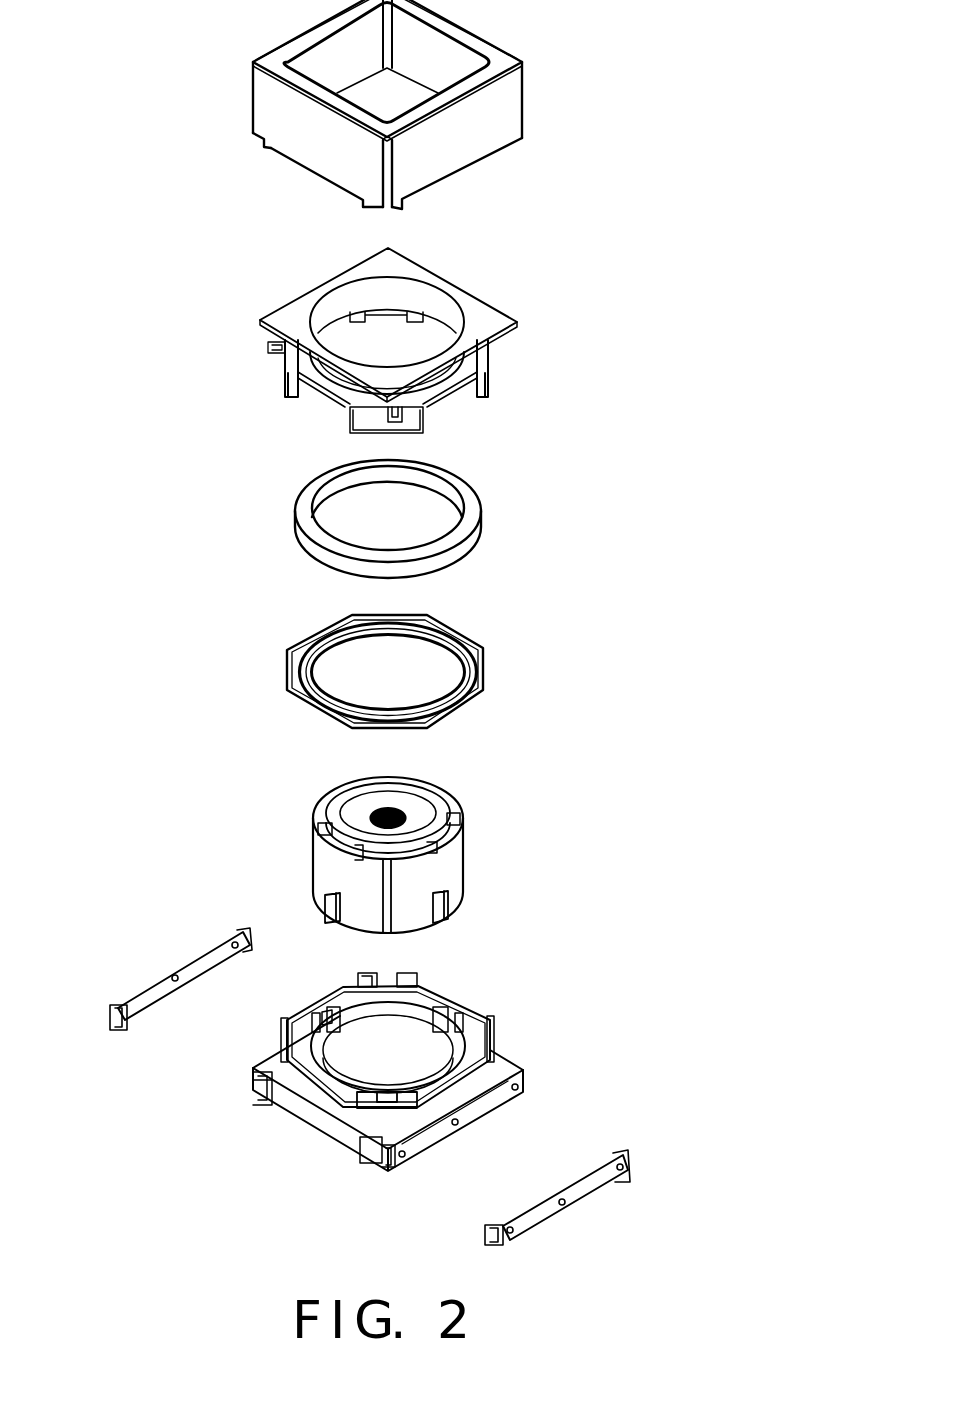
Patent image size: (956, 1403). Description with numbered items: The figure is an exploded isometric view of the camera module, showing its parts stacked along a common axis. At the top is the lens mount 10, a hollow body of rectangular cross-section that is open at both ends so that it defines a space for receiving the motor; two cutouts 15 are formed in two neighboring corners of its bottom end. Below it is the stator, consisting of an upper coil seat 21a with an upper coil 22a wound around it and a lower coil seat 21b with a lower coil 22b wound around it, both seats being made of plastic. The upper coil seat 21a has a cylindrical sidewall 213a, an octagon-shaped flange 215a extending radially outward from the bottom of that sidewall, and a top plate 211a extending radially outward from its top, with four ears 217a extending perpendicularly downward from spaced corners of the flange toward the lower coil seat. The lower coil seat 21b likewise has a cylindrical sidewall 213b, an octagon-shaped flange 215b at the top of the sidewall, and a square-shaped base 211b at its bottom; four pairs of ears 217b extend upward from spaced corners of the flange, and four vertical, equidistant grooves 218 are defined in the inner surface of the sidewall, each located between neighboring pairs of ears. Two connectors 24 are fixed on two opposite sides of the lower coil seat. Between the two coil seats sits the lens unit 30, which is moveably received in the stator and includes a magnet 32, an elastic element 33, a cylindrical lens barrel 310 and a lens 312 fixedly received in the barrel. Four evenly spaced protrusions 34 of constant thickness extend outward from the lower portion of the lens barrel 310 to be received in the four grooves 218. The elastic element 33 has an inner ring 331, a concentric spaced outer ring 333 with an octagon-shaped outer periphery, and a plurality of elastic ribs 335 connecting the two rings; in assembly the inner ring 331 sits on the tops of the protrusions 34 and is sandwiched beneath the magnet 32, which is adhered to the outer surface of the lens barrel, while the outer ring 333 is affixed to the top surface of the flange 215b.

The lens mount 10 is at (391, 104).
The cutouts 15 is at (262, 145).
The upper coil seat 21a is at (281, 325).
The top plate 211a is at (285, 320).
The cylindrical sidewall 213a is at (328, 312).
The flange 215a is at (293, 357).
The ears 217a is at (293, 387).
The upper coil 22a is at (443, 378).
The lens unit 30 is at (255, 696).
The magnet 32 is at (305, 520).
The elastic element 33 is at (295, 653).
The inner ring 331 is at (297, 680).
The outer ring 333 is at (293, 670).
The elastic ribs 335 is at (302, 645).
The lens barrel 310 is at (281, 829).
The lens 312 is at (355, 810).
The protrusions 34 is at (320, 887).
The lower coil seat 21b is at (448, 1044).
The base 211b is at (507, 1072).
The cylindrical sidewall 213b is at (420, 1020).
The flange 215b is at (475, 1035).
The ears 217b is at (410, 973).
The grooves 218 is at (328, 1012).
The lower coil 22b is at (345, 1102).
The connectors 24 is at (580, 1190).